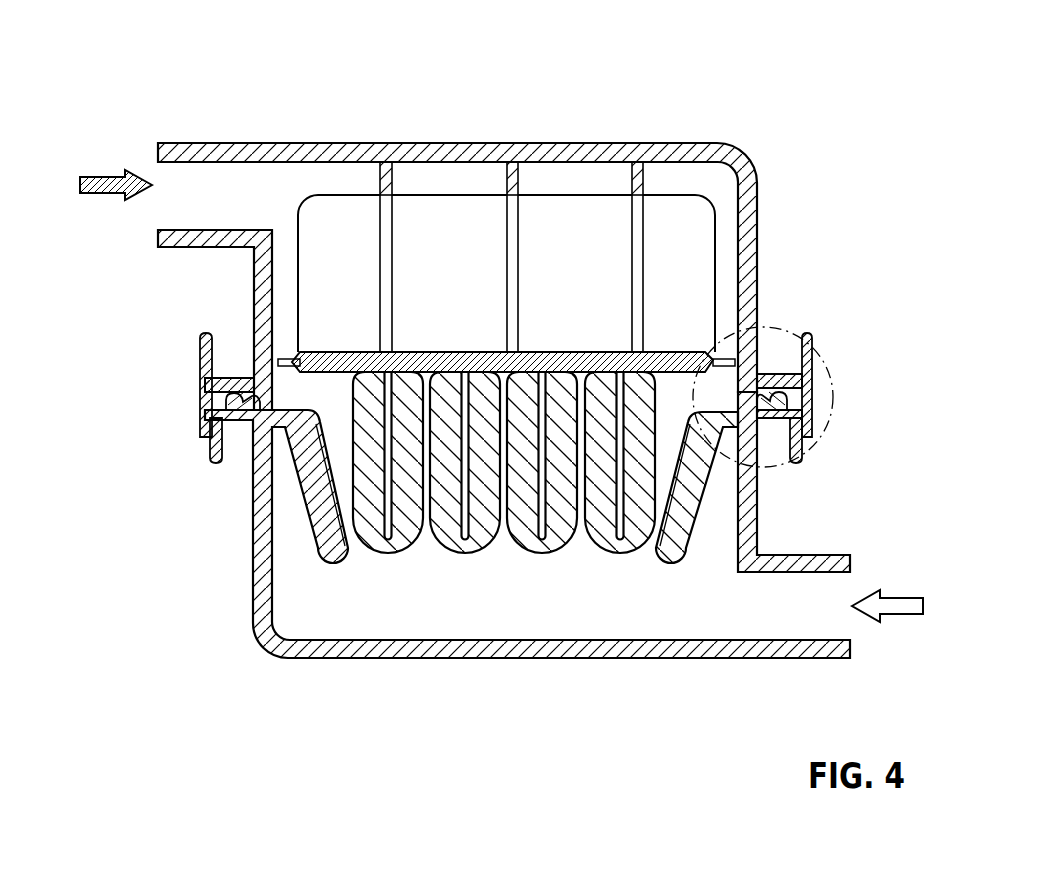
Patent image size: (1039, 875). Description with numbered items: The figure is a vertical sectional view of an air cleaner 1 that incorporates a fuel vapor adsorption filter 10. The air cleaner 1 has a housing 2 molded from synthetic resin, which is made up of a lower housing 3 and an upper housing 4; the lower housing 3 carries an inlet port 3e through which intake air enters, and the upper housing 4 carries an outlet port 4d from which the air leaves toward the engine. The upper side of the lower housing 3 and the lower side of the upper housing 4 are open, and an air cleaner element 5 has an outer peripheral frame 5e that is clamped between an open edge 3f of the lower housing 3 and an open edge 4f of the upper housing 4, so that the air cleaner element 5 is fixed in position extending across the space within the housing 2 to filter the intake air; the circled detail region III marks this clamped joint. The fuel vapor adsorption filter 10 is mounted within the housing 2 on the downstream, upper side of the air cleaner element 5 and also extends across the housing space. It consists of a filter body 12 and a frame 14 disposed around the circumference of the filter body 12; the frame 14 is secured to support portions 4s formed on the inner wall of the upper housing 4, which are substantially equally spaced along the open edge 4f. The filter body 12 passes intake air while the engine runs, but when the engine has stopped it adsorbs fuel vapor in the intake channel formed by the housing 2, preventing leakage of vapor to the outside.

The air cleaner 1 is at (553, 62).
The housing 2 is at (601, 142).
The lower housing 3 is at (527, 573).
The inlet port 3e is at (800, 628).
The open edge of the lower housing 3f is at (767, 420).
The upper housing 4 is at (508, 197).
The outlet port 4d is at (251, 160).
The open edge of the upper housing 4f is at (794, 352).
The support portions 4s is at (290, 340).
The air cleaner element 5 is at (497, 557).
The outer peripheral frame 5e is at (224, 404).
The fuel vapor adsorption filter 10 is at (553, 345).
The filter body 12 is at (477, 352).
The frame 14 is at (251, 350).
The detail region III is at (824, 428).